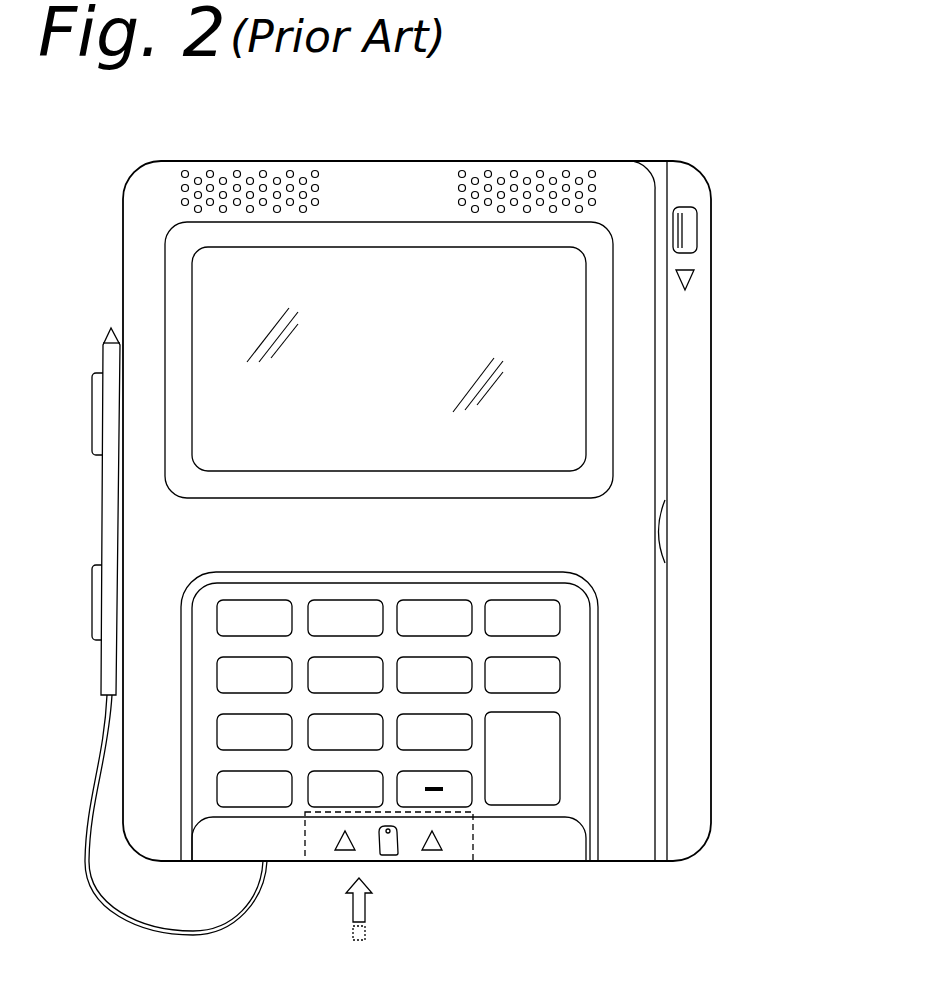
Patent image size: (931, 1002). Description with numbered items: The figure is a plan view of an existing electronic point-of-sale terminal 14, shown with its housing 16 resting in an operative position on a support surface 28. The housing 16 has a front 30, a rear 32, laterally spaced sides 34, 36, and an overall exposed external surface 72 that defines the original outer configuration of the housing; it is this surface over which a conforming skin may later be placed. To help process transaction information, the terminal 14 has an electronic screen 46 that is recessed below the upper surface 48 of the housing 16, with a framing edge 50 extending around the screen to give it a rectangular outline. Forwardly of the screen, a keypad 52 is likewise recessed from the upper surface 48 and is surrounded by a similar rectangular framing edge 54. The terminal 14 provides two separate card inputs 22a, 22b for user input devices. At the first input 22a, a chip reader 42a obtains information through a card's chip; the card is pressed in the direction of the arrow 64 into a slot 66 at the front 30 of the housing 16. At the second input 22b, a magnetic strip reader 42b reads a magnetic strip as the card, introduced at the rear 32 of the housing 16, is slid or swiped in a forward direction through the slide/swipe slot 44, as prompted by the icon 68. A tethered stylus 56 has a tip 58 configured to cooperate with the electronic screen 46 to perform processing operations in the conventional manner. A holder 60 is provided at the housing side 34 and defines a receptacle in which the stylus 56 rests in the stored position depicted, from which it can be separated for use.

The EPOS terminal 14 is at (527, 874).
The housing 16 is at (707, 452).
The card input 22a is at (387, 878).
The card input 22b is at (657, 149).
The support surface 28 is at (311, 899).
The front 30 is at (490, 862).
The rear 32 is at (447, 161).
The side 34 is at (123, 262).
The side 36 is at (712, 505).
The chip reader 42a is at (370, 838).
The magnetic strip reader 42b is at (697, 388).
The slide/swipe slot 44 is at (663, 187).
The electronic screen 46 is at (325, 280).
The upper surface 48 is at (348, 195).
The framing edge 50 is at (592, 296).
The keypad 52 is at (443, 698).
The framing edge 54 is at (590, 615).
The tethered stylus 56 is at (110, 520).
The tip 58 is at (109, 327).
The holder 60 is at (92, 561).
The arrow 64 is at (355, 911).
The slot 66 is at (306, 836).
The icon 68 is at (704, 261).
The external surface 72 is at (601, 563).